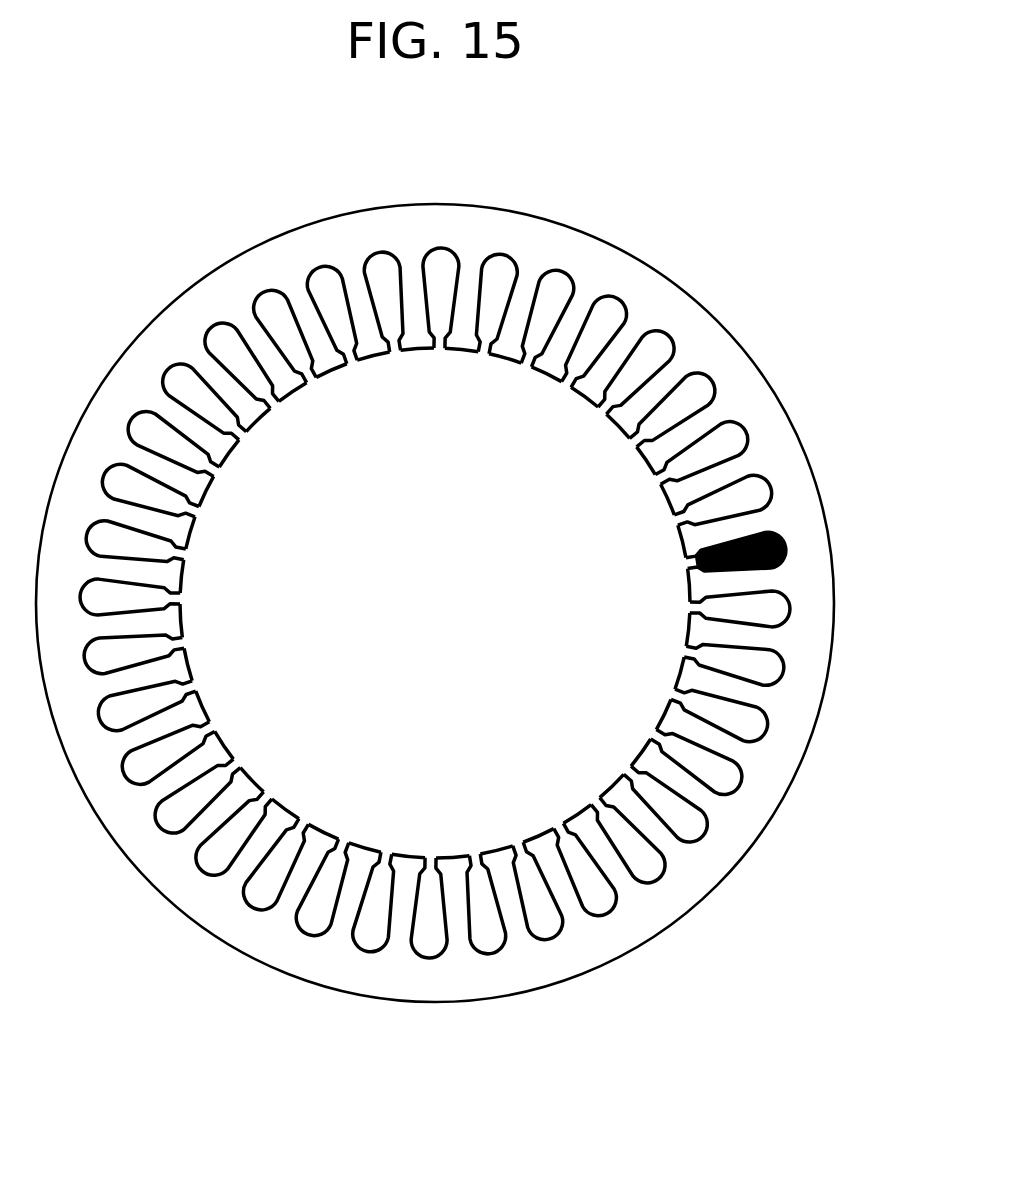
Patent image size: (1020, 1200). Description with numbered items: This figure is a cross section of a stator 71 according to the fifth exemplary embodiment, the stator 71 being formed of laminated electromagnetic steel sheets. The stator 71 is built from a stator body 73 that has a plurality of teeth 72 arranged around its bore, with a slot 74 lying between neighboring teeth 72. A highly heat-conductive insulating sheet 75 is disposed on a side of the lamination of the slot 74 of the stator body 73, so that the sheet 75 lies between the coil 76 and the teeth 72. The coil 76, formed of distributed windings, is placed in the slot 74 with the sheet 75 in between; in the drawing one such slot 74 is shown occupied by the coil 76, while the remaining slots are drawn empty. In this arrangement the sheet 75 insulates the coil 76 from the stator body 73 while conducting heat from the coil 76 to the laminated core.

The stator 71 is at (685, 252).
The teeth 72 is at (708, 633).
The stator body 73 is at (763, 408).
The slot 74 is at (678, 515).
The highly heat-conductive insulating sheet 75 is at (770, 485).
The coil 76 is at (780, 563).